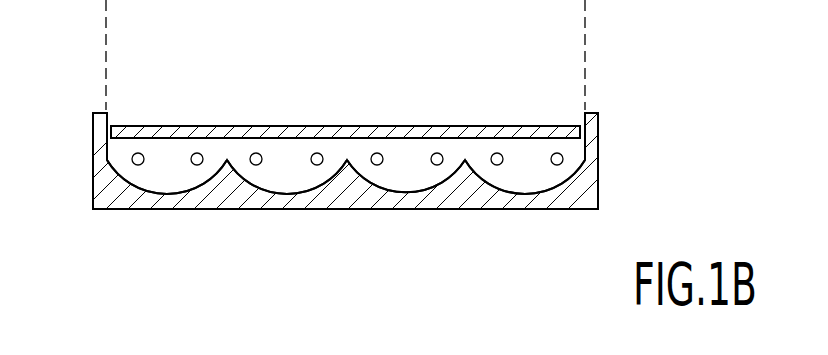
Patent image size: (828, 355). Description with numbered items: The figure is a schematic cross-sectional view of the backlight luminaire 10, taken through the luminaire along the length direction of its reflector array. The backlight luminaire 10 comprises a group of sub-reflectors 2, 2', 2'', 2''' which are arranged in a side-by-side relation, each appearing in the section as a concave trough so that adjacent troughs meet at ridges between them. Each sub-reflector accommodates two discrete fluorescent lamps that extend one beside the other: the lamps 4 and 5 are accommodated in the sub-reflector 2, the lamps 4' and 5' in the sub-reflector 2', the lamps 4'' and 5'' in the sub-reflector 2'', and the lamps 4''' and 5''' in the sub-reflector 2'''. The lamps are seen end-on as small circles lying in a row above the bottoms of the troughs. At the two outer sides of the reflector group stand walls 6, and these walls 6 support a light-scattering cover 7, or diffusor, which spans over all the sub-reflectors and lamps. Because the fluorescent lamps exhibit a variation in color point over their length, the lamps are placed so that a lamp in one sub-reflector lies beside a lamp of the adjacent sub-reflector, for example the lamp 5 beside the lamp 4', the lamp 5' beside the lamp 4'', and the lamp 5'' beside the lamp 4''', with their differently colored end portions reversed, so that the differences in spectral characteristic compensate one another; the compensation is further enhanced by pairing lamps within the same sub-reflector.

The backlight luminaire 10 is at (93, 100).
The walls 6 is at (93, 144).
The light-scattering cover 7 is at (527, 125).
The fluorescent lamp 4 is at (139, 115).
The fluorescent lamp 5 is at (198, 115).
The fluorescent lamp 4' is at (255, 115).
The fluorescent lamp 5' is at (315, 115).
The fluorescent lamp 4'' is at (373, 115).
The fluorescent lamp 5'' is at (442, 115).
The fluorescent lamp 4''' is at (494, 115).
The fluorescent lamp 5''' is at (559, 115).
The sub-reflector 2 is at (167, 209).
The sub-reflector 2' is at (287, 209).
The sub-reflector 2'' is at (406, 209).
The sub-reflector 2''' is at (525, 209).